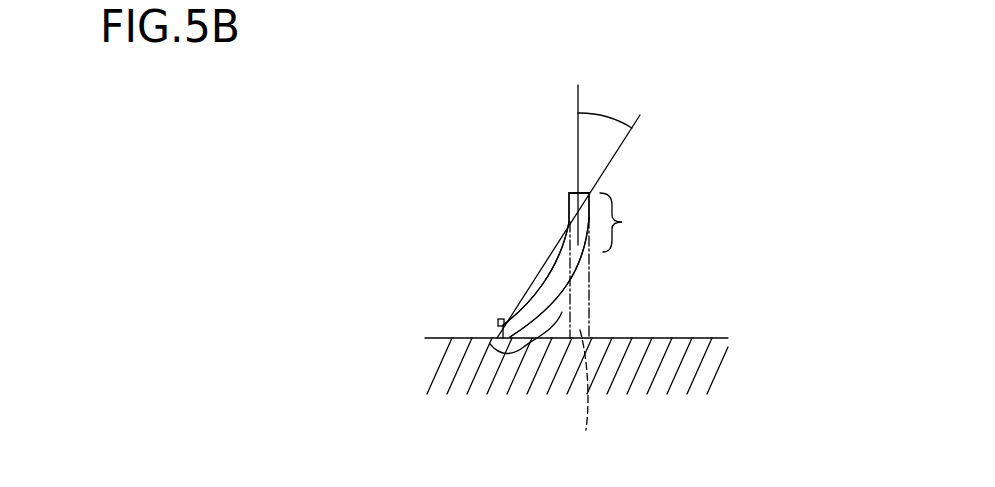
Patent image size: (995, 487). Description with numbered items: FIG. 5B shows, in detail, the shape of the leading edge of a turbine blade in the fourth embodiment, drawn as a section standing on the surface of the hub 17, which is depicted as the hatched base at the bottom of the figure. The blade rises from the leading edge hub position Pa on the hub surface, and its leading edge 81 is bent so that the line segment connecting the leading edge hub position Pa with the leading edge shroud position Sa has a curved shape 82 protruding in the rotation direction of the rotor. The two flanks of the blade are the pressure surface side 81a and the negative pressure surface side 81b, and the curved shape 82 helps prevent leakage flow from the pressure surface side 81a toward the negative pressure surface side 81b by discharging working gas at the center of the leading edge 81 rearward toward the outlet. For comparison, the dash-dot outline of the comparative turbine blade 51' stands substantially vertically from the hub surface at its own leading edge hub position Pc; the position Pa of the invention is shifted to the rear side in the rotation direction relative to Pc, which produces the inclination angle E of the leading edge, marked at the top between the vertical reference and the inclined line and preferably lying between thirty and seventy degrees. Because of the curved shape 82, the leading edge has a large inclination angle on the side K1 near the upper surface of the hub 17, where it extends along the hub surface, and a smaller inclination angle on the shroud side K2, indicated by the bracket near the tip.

The hub 17 is at (690, 338).
The leading edge 81 is at (537, 293).
The pressure surface side 81a is at (562, 270).
The negative pressure surface side 81b is at (565, 293).
The curved shape 82 is at (526, 253).
The turbine blade of comparative example 51' is at (629, 278).
The leading edge hub position Pa is at (498, 328).
The leading edge hub position of comparative example Pc is at (586, 395).
The side closer to the upper surface of the hub K1 is at (526, 346).
The shroud side K2 is at (630, 222).
The inclination angle E is at (605, 165).
The leading edge shroud position Sa is at (567, 190).